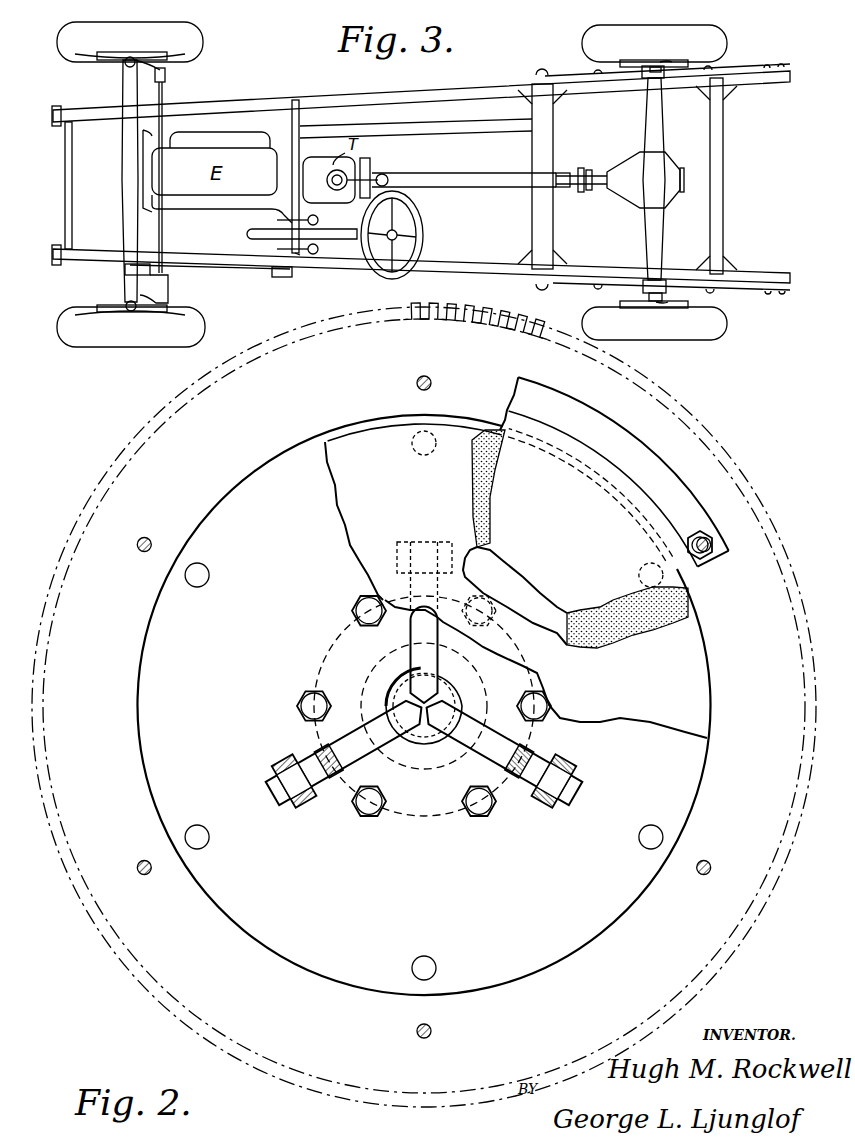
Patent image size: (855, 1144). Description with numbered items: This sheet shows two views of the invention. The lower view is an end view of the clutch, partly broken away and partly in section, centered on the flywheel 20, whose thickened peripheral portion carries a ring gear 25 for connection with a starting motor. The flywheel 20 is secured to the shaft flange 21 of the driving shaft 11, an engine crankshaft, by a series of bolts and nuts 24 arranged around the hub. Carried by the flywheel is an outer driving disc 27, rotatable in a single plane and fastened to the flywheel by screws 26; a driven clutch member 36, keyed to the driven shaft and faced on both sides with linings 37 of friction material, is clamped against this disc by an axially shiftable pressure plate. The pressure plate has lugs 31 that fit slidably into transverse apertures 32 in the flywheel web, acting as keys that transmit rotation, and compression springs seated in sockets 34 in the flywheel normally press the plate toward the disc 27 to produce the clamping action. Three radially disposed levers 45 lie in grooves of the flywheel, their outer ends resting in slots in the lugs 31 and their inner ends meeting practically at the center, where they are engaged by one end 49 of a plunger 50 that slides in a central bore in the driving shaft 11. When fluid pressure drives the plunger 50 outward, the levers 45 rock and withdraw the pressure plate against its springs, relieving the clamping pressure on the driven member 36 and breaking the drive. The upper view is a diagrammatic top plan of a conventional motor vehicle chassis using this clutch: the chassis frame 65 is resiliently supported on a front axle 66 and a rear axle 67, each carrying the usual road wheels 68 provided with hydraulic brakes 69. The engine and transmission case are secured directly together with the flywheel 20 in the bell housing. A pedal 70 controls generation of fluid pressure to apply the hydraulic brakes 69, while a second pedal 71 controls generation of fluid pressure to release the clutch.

In FIG. 2, the driving shaft 11 is at (356, 680).
In FIG. 2, the flywheel 20 is at (632, 398).
In FIG. 2, the shaft flange 21 is at (288, 760).
In FIG. 2, the nuts 24 is at (352, 610).
In FIG. 2, the ring gear 25 is at (465, 326).
In FIG. 2, the screws 26 is at (427, 375).
In FIG. 2, the outer driving disc 27 is at (640, 504).
In FIG. 2, the lugs 31 is at (277, 758).
In FIG. 2, the transverse apertures 32 is at (294, 803).
In FIG. 2, the sockets 34 is at (198, 588).
In FIG. 2, the driven clutch member 36 is at (686, 640).
In FIG. 2, the linings 37 is at (668, 607).
In FIG. 2, the levers 45 is at (416, 628).
In FIG. 2, the end of plunger 49 is at (414, 740).
In FIG. 2, the plunger 50 is at (434, 744).
In FIG. 3, the chassis frame 65 is at (240, 106).
In FIG. 3, the front axle 66 is at (128, 92).
In FIG. 3, the rear axle 67 is at (655, 112).
In FIG. 3, the road wheels 68 is at (193, 36).
In FIG. 3, the hydraulic brakes 69 is at (166, 57).
In FIG. 3, the pedal 70 is at (317, 219).
In FIG. 3, the pedal 71 is at (315, 254).